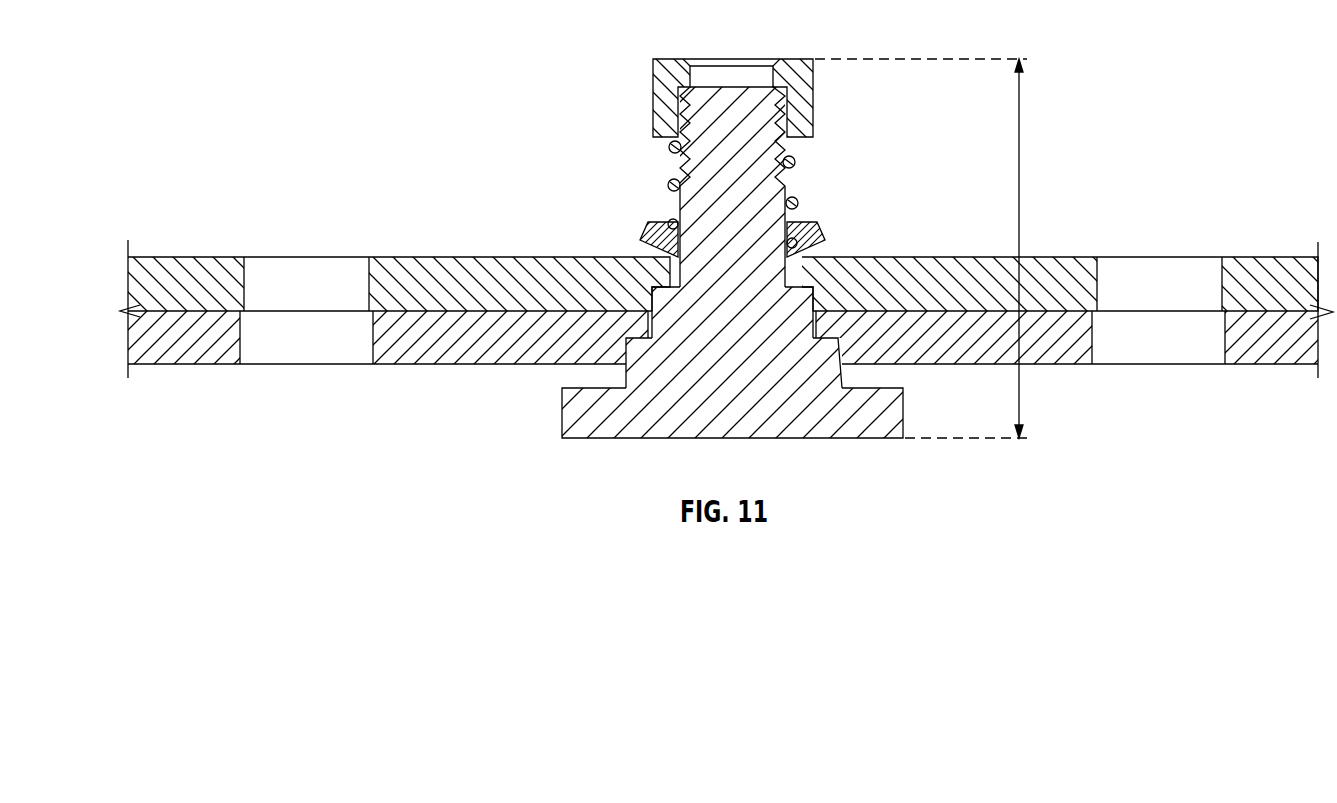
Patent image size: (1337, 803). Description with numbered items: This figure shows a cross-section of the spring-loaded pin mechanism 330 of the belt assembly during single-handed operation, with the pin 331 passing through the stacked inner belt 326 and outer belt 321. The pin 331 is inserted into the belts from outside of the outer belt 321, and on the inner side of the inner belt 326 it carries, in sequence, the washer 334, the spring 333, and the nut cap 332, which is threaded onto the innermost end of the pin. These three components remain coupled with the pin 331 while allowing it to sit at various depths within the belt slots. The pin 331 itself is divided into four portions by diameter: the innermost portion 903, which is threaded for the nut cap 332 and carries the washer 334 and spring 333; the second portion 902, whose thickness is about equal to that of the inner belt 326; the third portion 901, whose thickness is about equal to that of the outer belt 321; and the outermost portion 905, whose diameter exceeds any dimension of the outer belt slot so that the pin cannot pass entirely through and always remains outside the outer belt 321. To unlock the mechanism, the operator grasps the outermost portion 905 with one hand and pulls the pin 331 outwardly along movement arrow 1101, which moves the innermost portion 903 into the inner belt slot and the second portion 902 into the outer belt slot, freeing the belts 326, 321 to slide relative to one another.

The spring-loaded pin mechanism 330 is at (733, 130).
The pin 331 is at (713, 294).
The nut cap 332 is at (815, 97).
The spring 333 is at (798, 164).
The washer 334 is at (824, 232).
The inner belt 326 is at (1258, 270).
The outer belt 321 is at (1258, 360).
The innermost portion 903 is at (750, 254).
The second portion 902 is at (750, 327).
The third portion 901 is at (750, 379).
The outermost portion 905 is at (750, 434).
The movement arrow 1101 is at (1021, 190).